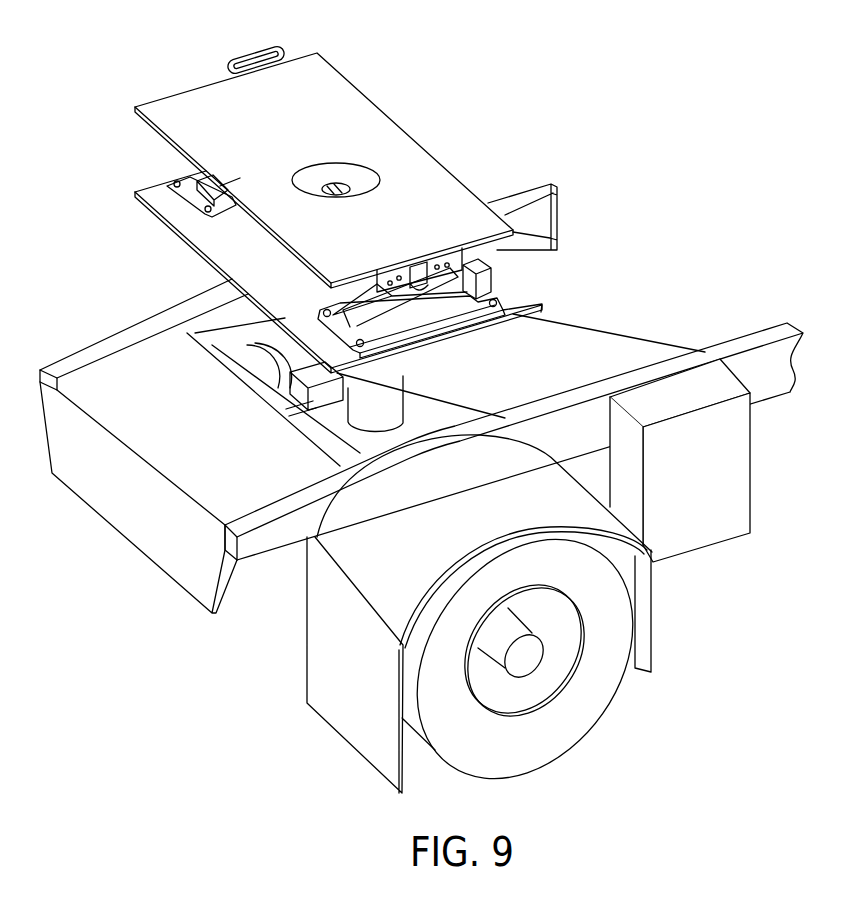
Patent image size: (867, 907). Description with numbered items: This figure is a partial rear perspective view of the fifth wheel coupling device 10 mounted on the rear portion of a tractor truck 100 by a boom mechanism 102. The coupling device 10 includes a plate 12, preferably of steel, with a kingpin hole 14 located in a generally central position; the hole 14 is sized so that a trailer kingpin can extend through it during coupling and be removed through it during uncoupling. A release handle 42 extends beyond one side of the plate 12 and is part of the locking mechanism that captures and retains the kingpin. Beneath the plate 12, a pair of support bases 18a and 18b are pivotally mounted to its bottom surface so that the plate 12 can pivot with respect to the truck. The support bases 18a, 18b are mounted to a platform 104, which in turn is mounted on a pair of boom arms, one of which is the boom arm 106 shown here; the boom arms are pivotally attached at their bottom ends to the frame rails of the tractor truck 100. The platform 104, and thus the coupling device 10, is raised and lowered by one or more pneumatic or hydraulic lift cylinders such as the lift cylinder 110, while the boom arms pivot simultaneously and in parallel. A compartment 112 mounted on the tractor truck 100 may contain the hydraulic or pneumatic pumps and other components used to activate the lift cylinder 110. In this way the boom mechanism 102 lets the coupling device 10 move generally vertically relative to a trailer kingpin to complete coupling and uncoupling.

The fifth wheel coupling device 10 is at (332, 189).
The plate 12 is at (350, 113).
The kingpin hole 14 is at (333, 186).
The release handle 42 is at (248, 58).
The support base 18a is at (184, 182).
The support base 18b is at (322, 320).
The platform 104 is at (212, 233).
The boom mechanism 102 is at (421, 530).
The tractor truck 100 is at (277, 553).
The boom arm 106 is at (619, 353).
The lift cylinder 110 is at (373, 410).
The compartment 112 is at (701, 523).